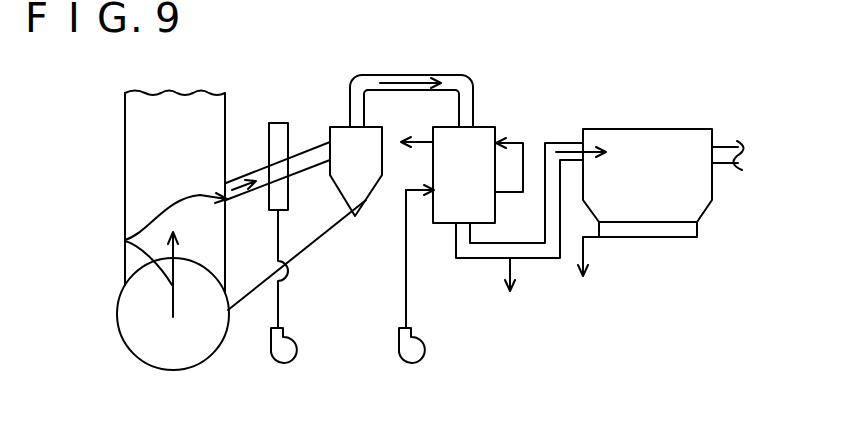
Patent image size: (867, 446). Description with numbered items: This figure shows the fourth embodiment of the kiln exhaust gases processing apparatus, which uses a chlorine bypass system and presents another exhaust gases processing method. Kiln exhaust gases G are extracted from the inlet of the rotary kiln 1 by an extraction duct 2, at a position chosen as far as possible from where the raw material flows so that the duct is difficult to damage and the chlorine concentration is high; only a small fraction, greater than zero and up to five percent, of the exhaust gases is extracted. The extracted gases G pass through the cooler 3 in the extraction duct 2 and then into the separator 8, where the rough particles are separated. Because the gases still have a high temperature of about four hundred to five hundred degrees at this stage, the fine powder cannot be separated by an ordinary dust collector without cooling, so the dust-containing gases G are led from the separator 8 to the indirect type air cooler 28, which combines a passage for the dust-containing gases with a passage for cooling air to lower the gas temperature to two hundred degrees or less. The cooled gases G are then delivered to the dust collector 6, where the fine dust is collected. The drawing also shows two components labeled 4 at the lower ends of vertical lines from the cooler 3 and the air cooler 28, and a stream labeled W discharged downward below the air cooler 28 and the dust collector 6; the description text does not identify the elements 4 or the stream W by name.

The rotary kiln 1 is at (121, 335).
The extraction duct 2 is at (255, 172).
The cooler 3 is at (279, 123).
The blower 4 is at (270, 362).
The dust collector 6 is at (675, 129).
The separator 8 is at (337, 127).
The air cooler 28 is at (486, 127).
The kiln exhaust gases G is at (125, 241).
The water W is at (580, 250).